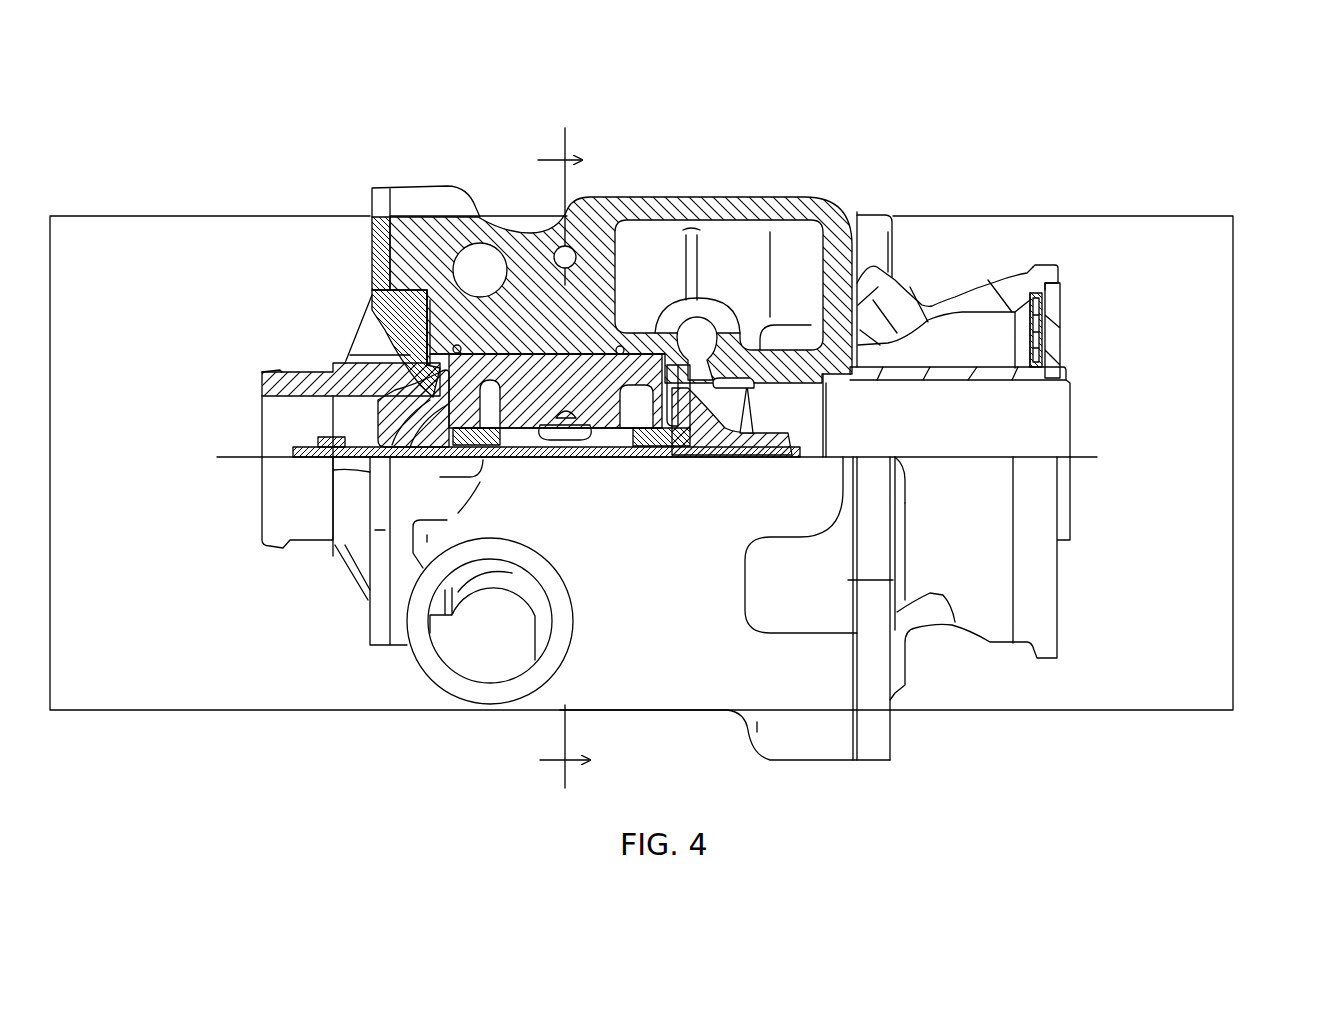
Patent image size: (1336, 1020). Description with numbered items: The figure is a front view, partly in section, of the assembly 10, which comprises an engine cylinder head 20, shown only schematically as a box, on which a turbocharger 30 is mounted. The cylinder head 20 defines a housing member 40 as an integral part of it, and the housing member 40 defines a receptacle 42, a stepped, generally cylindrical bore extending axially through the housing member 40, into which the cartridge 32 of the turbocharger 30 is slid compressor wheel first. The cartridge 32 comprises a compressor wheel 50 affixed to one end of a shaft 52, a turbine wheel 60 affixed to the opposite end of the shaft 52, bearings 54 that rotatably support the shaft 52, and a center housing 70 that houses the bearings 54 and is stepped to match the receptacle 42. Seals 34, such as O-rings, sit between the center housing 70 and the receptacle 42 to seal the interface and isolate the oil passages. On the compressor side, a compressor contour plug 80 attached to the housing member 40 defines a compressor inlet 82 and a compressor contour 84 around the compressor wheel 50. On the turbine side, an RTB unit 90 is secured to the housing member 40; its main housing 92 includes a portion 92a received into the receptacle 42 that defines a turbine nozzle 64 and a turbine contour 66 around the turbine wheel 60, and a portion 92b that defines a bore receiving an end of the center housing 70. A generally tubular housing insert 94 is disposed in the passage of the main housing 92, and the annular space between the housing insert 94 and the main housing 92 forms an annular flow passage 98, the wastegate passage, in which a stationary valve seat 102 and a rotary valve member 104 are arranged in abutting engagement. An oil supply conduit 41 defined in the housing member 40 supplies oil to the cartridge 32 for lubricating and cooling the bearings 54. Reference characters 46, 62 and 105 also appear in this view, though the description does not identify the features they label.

The assembly 10 is at (1025, 168).
The engine cylinder head 20 is at (1222, 292).
The turbocharger 30 is at (612, 193).
The cartridge 32 is at (687, 470).
The seals 34 is at (459, 346).
The housing member 40 is at (601, 262).
The oil supply conduit 41 is at (557, 262).
The receptacle 42 is at (575, 358).
The volute wall 46 is at (472, 265).
The compressor wheel 50 is at (376, 422).
The shaft 52 is at (330, 446).
The bearings 54 is at (597, 442).
The turbine wheel 60 is at (712, 438).
The bore 62 is at (692, 330).
The turbine nozzle 64 is at (695, 375).
The turbine contour 66 is at (752, 388).
The center housing 70 is at (514, 412).
The compressor contour plug 80 is at (322, 383).
The compressor inlet 82 is at (266, 398).
The compressor contour 84 is at (404, 388).
The RTB unit 90 is at (985, 274).
The main housing 92 is at (1008, 293).
The portion of housing member received into receptacle 92a is at (848, 298).
The portion defining bore 92b is at (1057, 272).
The housing insert 94 is at (992, 382).
The annular flow passage 98 is at (917, 355).
The stationary valve seat 102 is at (1053, 362).
The rotary valve member 104 is at (1030, 358).
The seal groove 105 is at (1028, 325).